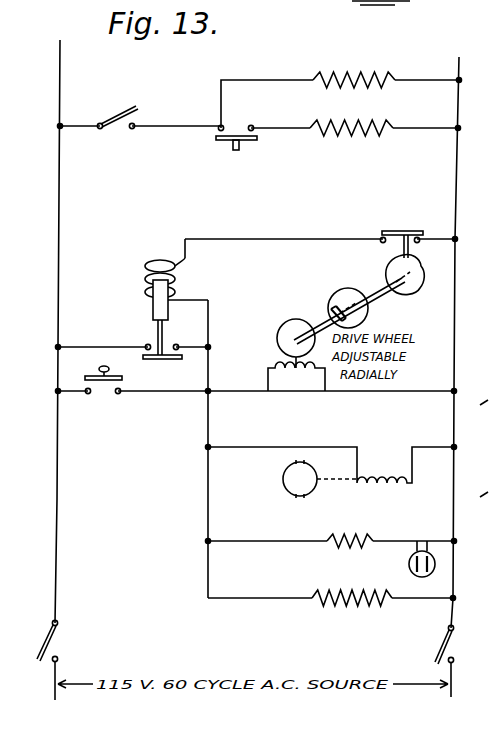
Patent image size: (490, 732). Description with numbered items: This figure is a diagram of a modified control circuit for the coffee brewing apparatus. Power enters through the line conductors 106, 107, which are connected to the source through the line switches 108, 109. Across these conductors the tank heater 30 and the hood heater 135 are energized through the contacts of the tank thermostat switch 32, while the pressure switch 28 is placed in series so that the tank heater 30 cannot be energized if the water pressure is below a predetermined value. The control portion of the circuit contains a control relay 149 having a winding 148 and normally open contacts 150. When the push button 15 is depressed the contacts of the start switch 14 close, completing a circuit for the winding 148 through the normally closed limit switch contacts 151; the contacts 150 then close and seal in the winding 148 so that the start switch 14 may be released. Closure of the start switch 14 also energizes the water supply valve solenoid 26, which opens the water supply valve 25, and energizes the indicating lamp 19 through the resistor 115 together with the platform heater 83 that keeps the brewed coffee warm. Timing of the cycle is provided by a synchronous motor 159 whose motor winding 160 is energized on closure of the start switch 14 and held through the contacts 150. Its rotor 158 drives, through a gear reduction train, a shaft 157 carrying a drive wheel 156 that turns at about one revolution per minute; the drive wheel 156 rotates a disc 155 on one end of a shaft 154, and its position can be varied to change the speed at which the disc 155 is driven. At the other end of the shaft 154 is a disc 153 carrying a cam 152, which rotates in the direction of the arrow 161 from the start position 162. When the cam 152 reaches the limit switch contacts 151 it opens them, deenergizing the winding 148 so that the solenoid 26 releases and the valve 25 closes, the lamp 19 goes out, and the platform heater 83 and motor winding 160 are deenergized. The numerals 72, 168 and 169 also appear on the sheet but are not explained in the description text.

The start switch 14 is at (256, 401).
The push button 15 is at (94, 368).
The indicating lamp 19 is at (408, 566).
The water supply valve 25 is at (283, 479).
The water supply valve solenoid 26 is at (383, 467).
The pressure switch 28 is at (240, 126).
The tank heater 30 is at (358, 128).
The tank thermostat switch 32 is at (145, 121).
The fragment of adjacent figure 72 is at (383, 4).
The platform heater 83 is at (318, 588).
The line conductor 106 is at (55, 581).
The line conductor 107 is at (452, 588).
The line switch 108 is at (58, 649).
The line switch 109 is at (452, 652).
The resistor 115 is at (358, 552).
The hood heater 135 is at (398, 79).
The winding 148 is at (172, 272).
The control relay 149 is at (134, 294).
The contacts 150 is at (172, 338).
The limit switch contacts 151 is at (386, 246).
The cam 152 is at (425, 273).
The disc 153 is at (408, 296).
The shaft 154 is at (375, 289).
The disc 155 is at (344, 295).
The drive wheel 156 is at (327, 304).
The shaft 157 is at (322, 318).
The rotor 158 is at (277, 336).
The synchronous motor 159 is at (270, 357).
The motor winding 160 is at (304, 378).
The arrow 161 is at (424, 282).
The start position 162 is at (426, 256).
The conductor 168 is at (474, 409).
The conductor 169 is at (474, 500).